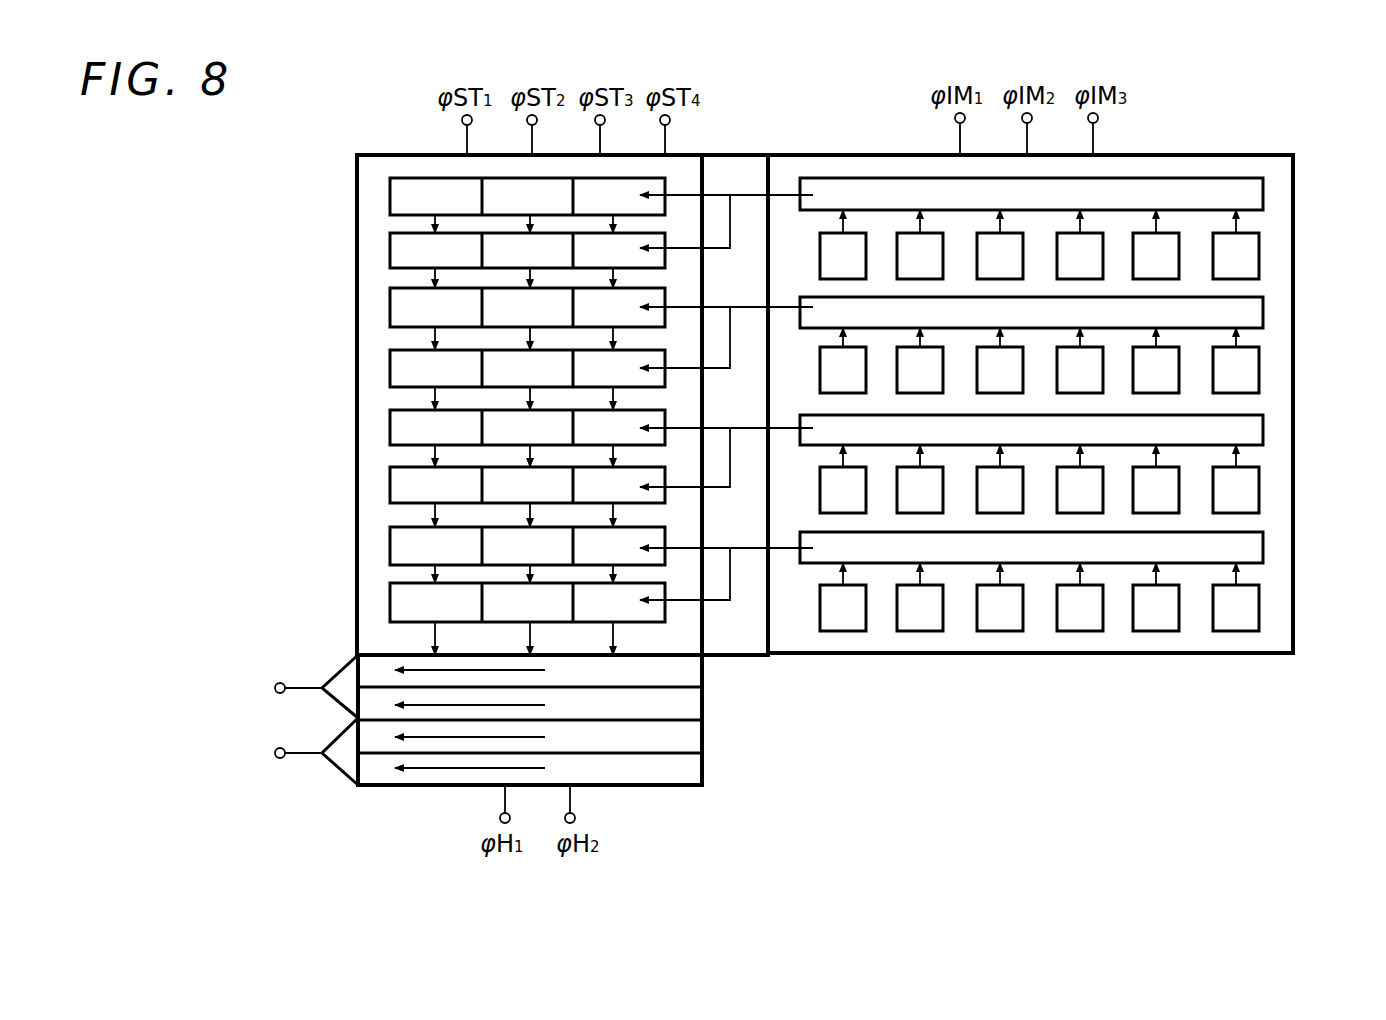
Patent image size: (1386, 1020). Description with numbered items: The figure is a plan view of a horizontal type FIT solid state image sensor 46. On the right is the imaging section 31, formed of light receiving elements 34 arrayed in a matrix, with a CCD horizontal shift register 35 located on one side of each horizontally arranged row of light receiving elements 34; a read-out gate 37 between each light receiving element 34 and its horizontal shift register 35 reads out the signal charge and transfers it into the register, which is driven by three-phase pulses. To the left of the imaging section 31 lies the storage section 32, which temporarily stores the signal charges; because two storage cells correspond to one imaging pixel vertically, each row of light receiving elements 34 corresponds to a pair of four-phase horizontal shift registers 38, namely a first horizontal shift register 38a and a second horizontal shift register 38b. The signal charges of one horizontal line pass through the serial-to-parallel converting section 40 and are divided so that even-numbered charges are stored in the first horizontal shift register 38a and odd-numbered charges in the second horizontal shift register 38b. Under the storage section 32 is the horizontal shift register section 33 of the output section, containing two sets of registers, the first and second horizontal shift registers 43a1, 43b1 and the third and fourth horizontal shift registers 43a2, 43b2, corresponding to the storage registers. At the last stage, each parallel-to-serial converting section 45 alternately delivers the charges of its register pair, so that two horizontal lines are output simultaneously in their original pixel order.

The horizontal type FIT solid state image sensor 46 is at (186, 169).
The horizontal shift register 38 is at (275, 168).
The first horizontal shift register 38a is at (392, 192).
The second horizontal shift register 38b is at (392, 243).
The storage section 32 is at (357, 343).
The serial-to-parallel converting section 40 is at (748, 640).
The imaging section 31 is at (1293, 363).
The horizontal shift register 35 is at (1192, 188).
The light receiving element 34 is at (1260, 256).
The read-out gate 37 is at (1250, 220).
The horizontal shift register section 33 is at (648, 787).
The first horizontal shift register 43a1 is at (688, 672).
The second horizontal shift register 43b1 is at (688, 708).
The third horizontal shift register 43a2 is at (688, 737).
The fourth horizontal shift register 43b2 is at (690, 768).
The parallel-to-serial converting section 45 is at (345, 680).